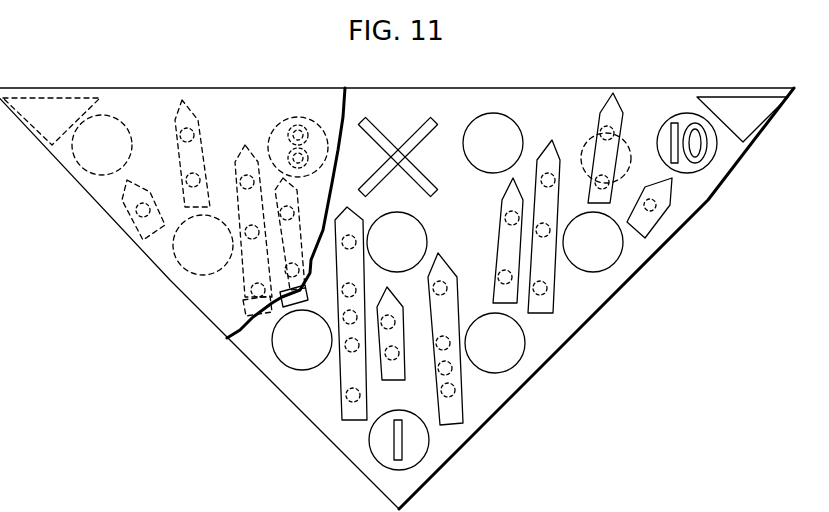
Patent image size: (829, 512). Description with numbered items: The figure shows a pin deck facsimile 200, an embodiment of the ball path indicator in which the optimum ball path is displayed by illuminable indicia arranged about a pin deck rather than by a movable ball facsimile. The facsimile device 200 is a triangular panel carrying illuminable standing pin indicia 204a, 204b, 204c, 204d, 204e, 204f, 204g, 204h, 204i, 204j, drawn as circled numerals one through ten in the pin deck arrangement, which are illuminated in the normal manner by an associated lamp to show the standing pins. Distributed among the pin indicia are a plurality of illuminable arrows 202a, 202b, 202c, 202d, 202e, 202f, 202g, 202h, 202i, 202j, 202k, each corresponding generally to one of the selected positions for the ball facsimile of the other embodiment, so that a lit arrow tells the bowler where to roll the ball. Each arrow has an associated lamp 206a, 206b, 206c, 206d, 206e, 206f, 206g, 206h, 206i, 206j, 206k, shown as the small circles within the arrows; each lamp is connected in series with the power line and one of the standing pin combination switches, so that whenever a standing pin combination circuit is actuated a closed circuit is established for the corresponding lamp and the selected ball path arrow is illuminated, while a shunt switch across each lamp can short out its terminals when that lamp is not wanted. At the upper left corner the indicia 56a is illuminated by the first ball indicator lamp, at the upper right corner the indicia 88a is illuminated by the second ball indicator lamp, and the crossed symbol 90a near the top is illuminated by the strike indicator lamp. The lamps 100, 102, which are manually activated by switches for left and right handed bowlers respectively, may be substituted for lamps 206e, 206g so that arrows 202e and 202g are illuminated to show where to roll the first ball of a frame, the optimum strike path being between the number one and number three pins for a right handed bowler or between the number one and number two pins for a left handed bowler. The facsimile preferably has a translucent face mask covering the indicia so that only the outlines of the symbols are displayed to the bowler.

The pin deck facsimile 200 is at (228, 68).
The first ball indicia 56a is at (64, 72).
The second ball indicia 88a is at (745, 97).
The strike indicia 90a is at (367, 122).
The standing pin indicia 204a is at (428, 455).
The standing pin indicia 204b is at (280, 357).
The standing pin indicia 204c is at (523, 355).
The standing pin indicia 204d is at (182, 268).
The standing pin indicia 204e is at (417, 216).
The standing pin indicia 204f is at (612, 267).
The standing pin indicia 204g is at (112, 115).
The standing pin indicia 204h is at (296, 117).
The standing pin indicia 204i is at (493, 113).
The standing pin indicia 204j is at (681, 113).
The illuminable arrow 202a is at (670, 203).
The illuminable arrow 202b is at (612, 92).
The illuminable arrow 202c is at (558, 155).
The illuminable arrow 202d is at (505, 197).
The illuminable arrow 202e is at (466, 428).
The illuminable arrow 202f is at (385, 360).
The illuminable arrow 202g is at (350, 200).
The illuminable arrow 202h is at (295, 300).
The illuminable arrow 202i is at (272, 135).
The illuminable arrow 202j is at (196, 120).
The illuminable arrow 202k is at (125, 197).
The arrow lamp 206a is at (653, 207).
The arrow lamp 206b is at (608, 183).
The arrow lamp 206c is at (542, 165).
The arrow lamp 206d is at (505, 217).
The arrow lamp 206e is at (455, 380).
The arrow lamp 206f is at (385, 360).
The arrow lamp 206g is at (345, 352).
The arrow lamp 206h is at (247, 297).
The arrow lamp 206i is at (250, 285).
The arrow lamp 206j is at (185, 184).
The arrow lamp 206k is at (136, 232).
The first ball lamp 100 is at (440, 372).
The first ball lamp 102 is at (341, 311).